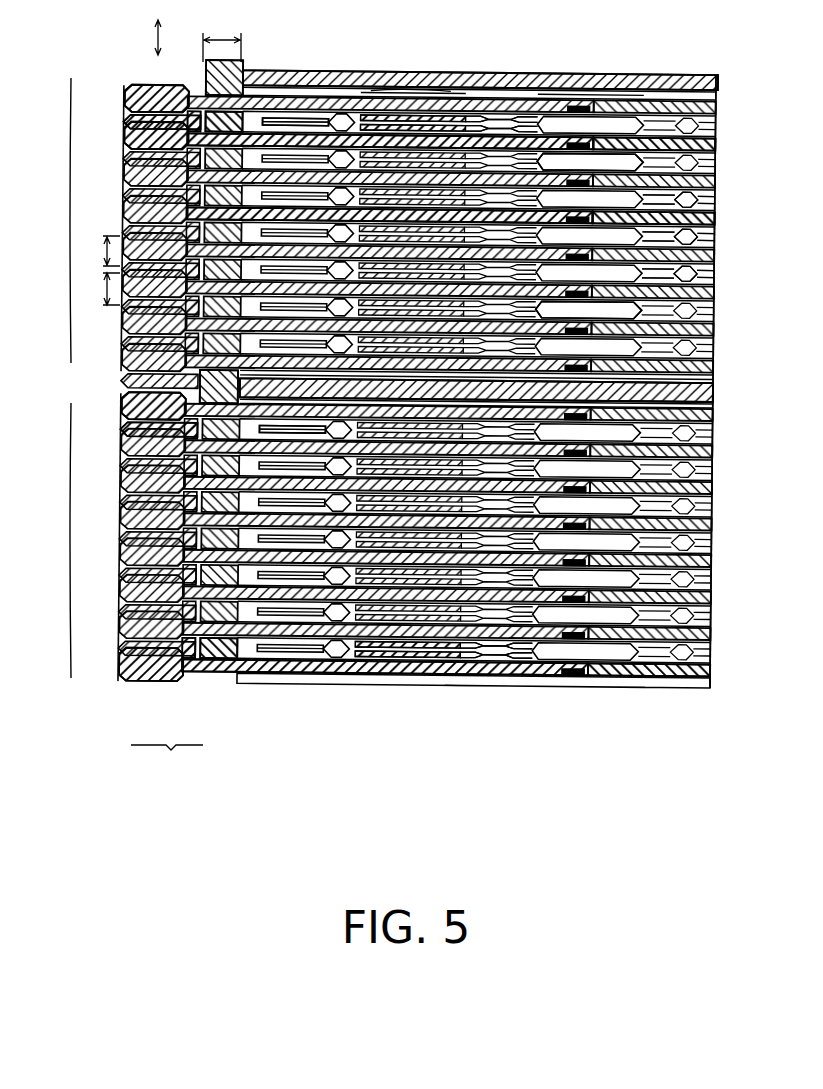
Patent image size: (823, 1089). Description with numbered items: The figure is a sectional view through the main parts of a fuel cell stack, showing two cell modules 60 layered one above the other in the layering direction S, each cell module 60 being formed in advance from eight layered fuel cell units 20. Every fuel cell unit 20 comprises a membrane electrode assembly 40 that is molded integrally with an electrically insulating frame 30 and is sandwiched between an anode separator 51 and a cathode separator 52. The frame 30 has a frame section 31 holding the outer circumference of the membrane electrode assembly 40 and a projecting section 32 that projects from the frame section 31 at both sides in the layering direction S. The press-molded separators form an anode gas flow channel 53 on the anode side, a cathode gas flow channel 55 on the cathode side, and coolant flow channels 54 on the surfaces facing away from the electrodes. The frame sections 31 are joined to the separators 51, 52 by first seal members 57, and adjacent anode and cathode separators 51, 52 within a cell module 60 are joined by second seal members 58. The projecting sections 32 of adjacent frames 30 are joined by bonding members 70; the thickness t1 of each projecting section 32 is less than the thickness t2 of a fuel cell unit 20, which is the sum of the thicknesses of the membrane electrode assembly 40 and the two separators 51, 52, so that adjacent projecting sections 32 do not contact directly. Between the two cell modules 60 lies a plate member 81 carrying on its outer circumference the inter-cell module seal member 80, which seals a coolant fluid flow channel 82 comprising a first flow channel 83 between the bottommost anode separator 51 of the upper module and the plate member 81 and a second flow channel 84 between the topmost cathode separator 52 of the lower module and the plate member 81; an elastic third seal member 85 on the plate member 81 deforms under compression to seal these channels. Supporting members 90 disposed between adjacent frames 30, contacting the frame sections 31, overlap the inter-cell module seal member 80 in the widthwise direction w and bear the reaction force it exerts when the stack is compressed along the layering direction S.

The fuel cell unit 20 is at (590, 76).
The frame 30 is at (167, 760).
The frame section 31 is at (186, 110).
The projecting section 32 is at (130, 90).
The membrane electrode assembly 40 is at (693, 122).
The anode separator 51 is at (693, 146).
The cathode separator 52 is at (295, 112).
The anode gas flow channel 53 is at (673, 225).
The coolant flow channel 54 is at (678, 188).
The cathode gas flow channel 55 is at (693, 204).
The first seal member 57 is at (470, 100).
The second seal member 58 is at (412, 108).
The cell module 60 is at (55, 378).
The bonding member 70 is at (120, 116).
The inter-cell module seal member 80 is at (196, 72).
The plate member 81 is at (640, 66).
The fluid flow channel 82 is at (753, 358).
The first flow channel 83 is at (700, 375).
The second flow channel 84 is at (700, 388).
The third seal member 85 is at (430, 82).
The supporting member 90 is at (208, 150).
The layering direction s is at (148, 35).
The widthwise direction w is at (222, 38).
The thickness of the projecting section t1 is at (101, 251).
The thickness of the fuel cell unit t2 is at (101, 289).